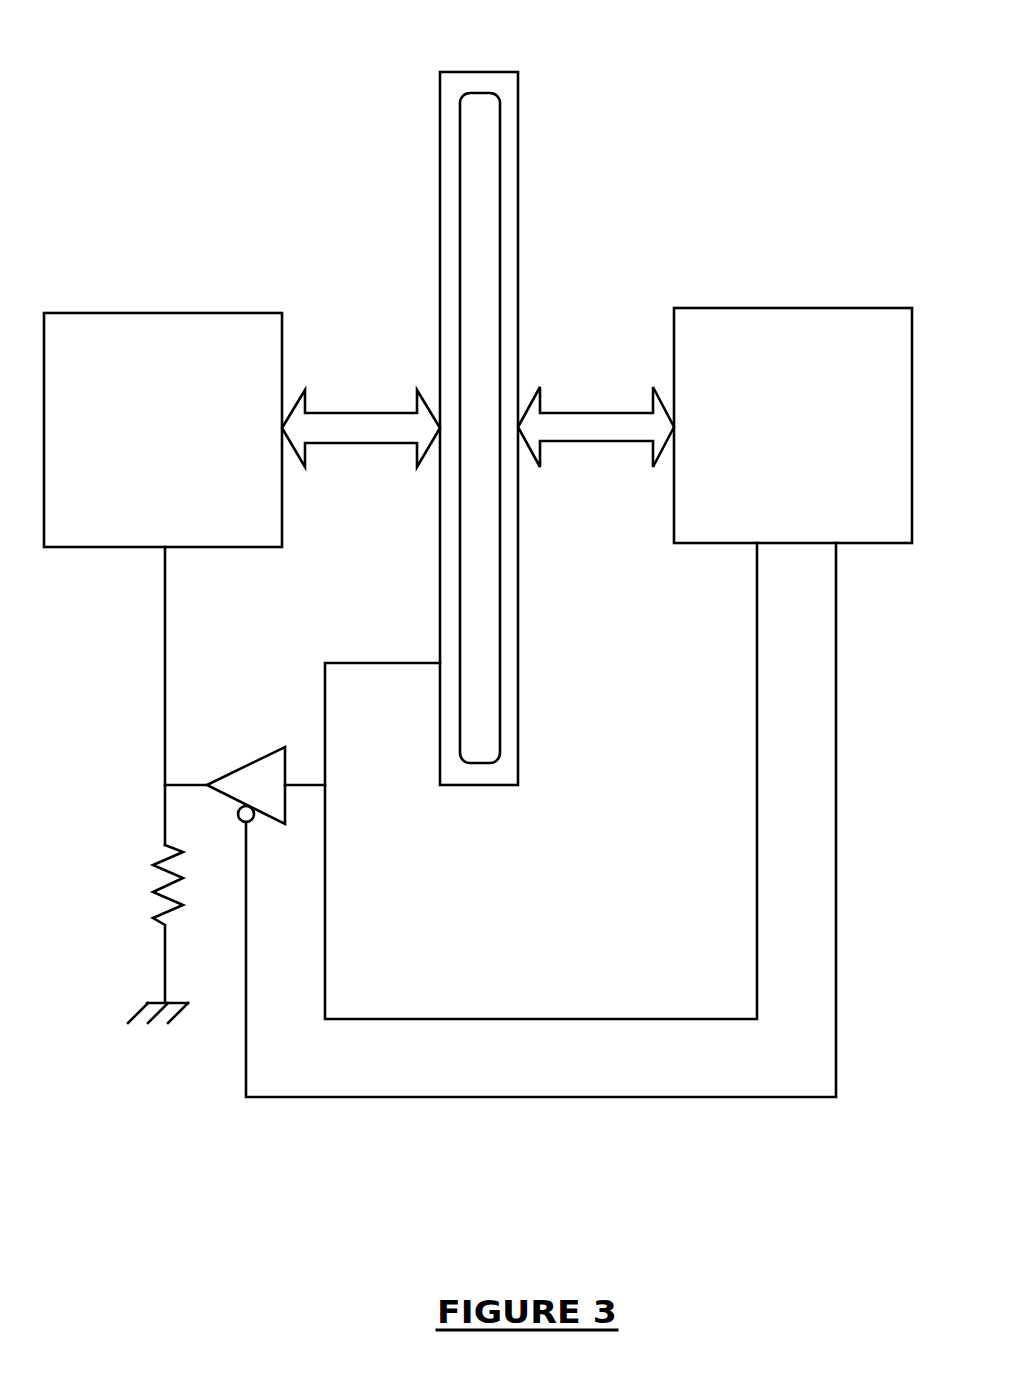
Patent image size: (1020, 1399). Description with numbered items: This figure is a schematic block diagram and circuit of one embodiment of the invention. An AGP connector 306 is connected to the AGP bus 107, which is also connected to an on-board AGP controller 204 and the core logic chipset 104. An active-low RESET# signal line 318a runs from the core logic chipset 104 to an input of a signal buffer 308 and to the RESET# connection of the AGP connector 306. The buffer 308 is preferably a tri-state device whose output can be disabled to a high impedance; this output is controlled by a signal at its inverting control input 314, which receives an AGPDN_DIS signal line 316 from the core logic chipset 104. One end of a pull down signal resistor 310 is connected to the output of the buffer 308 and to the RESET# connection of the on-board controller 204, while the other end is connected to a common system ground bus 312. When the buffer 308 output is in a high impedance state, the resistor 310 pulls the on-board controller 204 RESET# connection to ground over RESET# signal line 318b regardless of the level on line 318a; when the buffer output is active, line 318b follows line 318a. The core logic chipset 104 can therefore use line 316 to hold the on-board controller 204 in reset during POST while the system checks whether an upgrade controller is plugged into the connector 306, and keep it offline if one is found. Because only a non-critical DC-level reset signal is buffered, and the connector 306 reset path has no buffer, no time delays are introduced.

The core logic chipset 104 is at (850, 318).
The AGP bus 107 is at (348, 420).
The on-board AGP controller 204 is at (223, 323).
The AGP connector 306 is at (495, 83).
The signal buffer 308 is at (255, 773).
The pull down signal resistor 310 is at (157, 867).
The common system ground bus 312 is at (148, 1003).
The inverting control input 314 is at (253, 827).
The AGPDN_DIS signal line 316 is at (308, 1098).
The RESET# signal line 318a is at (405, 1020).
The RESET# signal line 318b is at (166, 745).